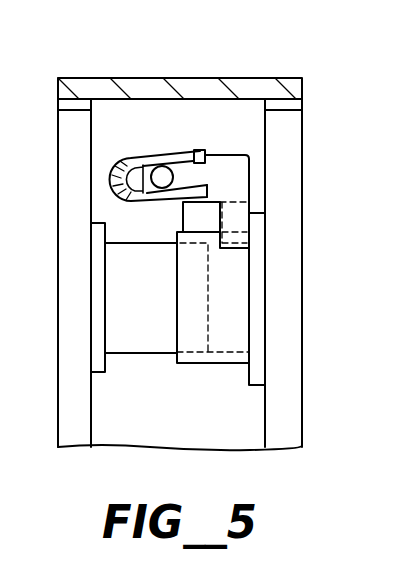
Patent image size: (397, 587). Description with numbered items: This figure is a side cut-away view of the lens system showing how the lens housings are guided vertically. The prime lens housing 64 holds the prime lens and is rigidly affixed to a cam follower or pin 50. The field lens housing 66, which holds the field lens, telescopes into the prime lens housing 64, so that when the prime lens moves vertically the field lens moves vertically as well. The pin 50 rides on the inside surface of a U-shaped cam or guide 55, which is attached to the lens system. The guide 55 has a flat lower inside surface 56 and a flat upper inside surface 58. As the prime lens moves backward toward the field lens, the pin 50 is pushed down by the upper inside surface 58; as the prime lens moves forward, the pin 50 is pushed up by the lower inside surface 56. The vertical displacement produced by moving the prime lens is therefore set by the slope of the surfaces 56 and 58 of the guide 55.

The pin 50 is at (160, 178).
The flat upper inside surface 58 is at (196, 151).
The guide 55 is at (112, 190).
The flat lower inside surface 56 is at (204, 184).
The field lens housing 66 is at (140, 354).
The prime lens housing 64 is at (208, 364).